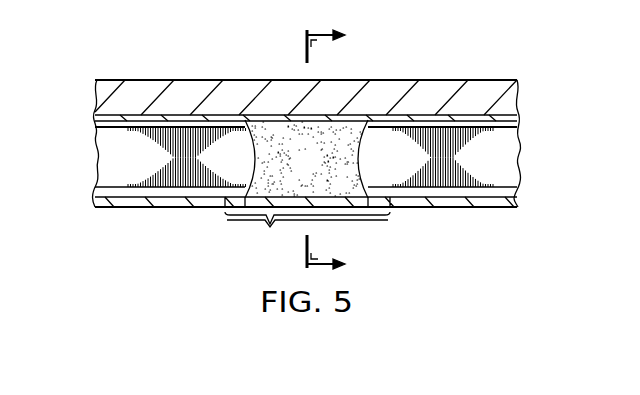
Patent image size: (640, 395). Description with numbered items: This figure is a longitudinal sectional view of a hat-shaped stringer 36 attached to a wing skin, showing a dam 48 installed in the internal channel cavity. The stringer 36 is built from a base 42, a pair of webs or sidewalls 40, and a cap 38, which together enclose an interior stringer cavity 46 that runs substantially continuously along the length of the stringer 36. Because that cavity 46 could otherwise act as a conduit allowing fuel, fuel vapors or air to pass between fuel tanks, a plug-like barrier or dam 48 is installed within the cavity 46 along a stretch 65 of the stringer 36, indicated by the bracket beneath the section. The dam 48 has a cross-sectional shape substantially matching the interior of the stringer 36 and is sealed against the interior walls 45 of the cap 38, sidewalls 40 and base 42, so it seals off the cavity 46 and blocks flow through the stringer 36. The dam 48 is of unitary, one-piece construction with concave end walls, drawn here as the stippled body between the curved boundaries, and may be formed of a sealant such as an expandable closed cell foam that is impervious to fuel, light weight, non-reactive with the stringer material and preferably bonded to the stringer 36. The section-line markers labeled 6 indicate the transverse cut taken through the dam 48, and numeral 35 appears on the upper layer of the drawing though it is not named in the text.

The top substrate layer 35 is at (444, 89).
The base 42 is at (178, 126).
The stringer cavity 46 is at (110, 128).
The sidewalls 40 is at (97, 162).
The interior walls 45 is at (513, 163).
The dam 48 is at (317, 171).
The cap 38 is at (173, 207).
The stringer 36 is at (466, 226).
The stretch 65 is at (307, 232).
The section line 6- 6 is at (334, 151).